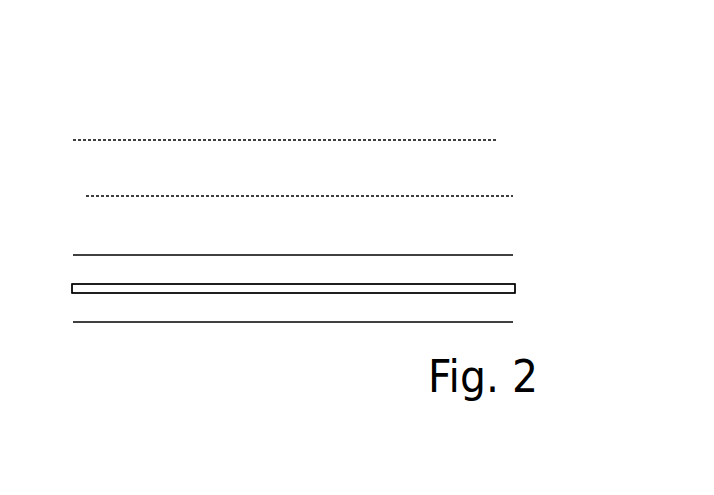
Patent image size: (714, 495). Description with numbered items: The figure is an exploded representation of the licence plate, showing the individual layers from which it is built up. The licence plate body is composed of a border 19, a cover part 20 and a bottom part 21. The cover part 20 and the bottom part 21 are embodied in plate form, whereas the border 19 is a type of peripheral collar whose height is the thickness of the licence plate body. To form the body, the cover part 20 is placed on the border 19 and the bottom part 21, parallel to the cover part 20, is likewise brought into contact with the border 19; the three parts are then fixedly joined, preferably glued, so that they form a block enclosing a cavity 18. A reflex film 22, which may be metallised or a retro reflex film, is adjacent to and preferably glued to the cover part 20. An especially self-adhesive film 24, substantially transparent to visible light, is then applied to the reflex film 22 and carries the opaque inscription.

The cavity 18 is at (98, 293).
The border 19 is at (515, 290).
The cover part 20 is at (500, 255).
The bottom part 21 is at (228, 322).
The reflex film 22 is at (498, 196).
The film 24 is at (445, 140).